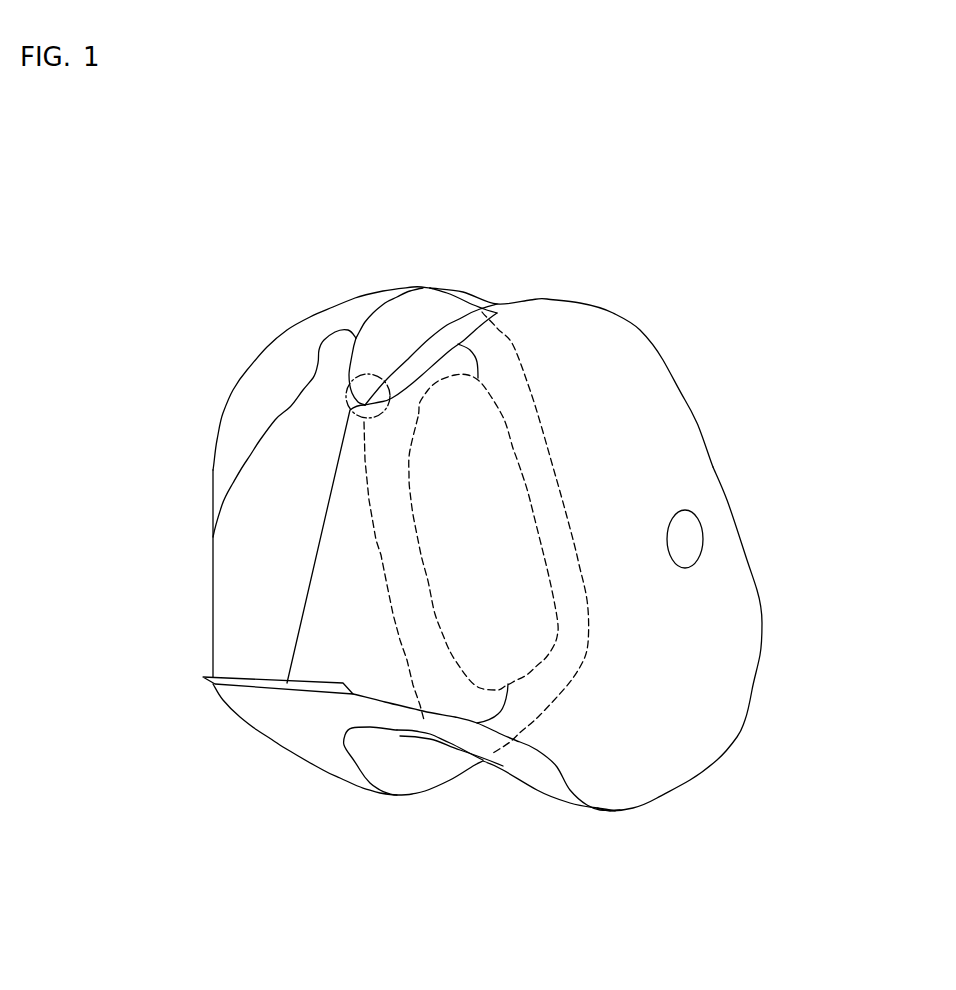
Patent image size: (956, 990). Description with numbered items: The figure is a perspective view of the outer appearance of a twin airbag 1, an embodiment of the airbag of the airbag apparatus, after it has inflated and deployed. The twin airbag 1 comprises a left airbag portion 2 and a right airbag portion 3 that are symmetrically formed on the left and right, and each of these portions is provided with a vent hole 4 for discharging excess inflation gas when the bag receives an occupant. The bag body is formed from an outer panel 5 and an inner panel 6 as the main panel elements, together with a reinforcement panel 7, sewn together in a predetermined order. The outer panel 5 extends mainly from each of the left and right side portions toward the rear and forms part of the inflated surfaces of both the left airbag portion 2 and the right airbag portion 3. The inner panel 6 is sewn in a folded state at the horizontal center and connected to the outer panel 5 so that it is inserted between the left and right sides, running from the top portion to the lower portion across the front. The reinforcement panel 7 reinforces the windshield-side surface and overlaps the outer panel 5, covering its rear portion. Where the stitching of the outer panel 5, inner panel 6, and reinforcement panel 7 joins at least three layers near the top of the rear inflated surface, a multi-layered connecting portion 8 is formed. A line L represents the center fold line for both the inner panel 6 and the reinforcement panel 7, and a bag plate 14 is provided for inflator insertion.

The twin airbag 1 is at (716, 316).
The left airbag portion 2 is at (709, 470).
The right airbag portion 3 is at (293, 320).
The vent hole 4 is at (702, 553).
The outer panel 5 is at (697, 423).
The inner panel 6 is at (437, 307).
The reinforcement panel 7 is at (262, 503).
The multi-layered connecting portion 8 is at (340, 392).
The line L is at (297, 640).
The bag plate 14 is at (398, 815).